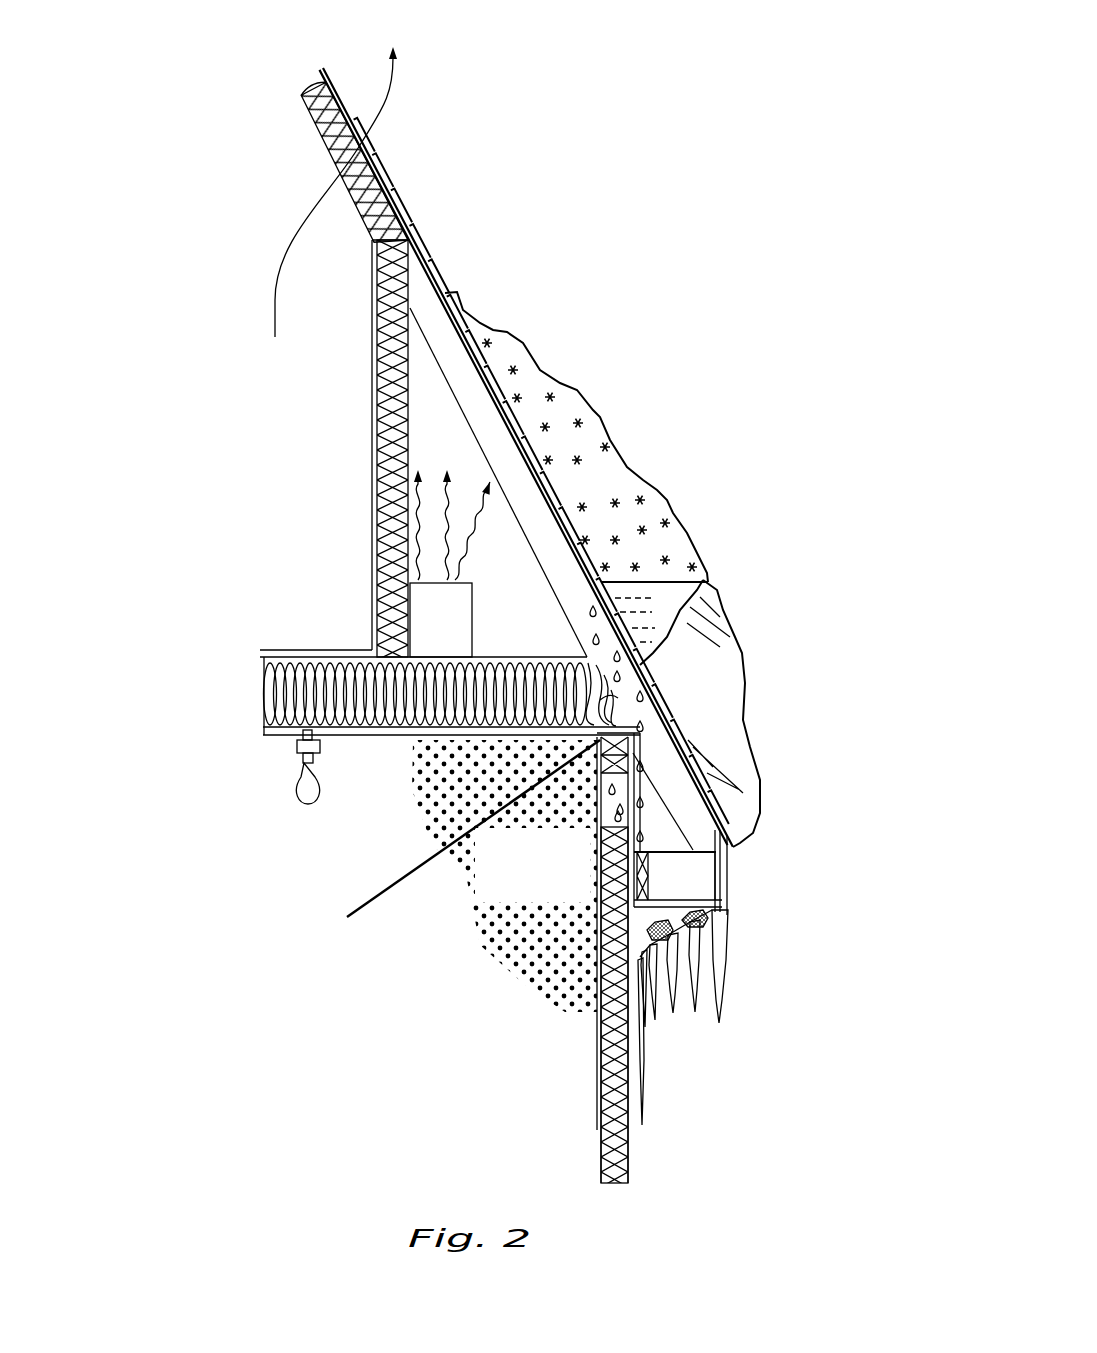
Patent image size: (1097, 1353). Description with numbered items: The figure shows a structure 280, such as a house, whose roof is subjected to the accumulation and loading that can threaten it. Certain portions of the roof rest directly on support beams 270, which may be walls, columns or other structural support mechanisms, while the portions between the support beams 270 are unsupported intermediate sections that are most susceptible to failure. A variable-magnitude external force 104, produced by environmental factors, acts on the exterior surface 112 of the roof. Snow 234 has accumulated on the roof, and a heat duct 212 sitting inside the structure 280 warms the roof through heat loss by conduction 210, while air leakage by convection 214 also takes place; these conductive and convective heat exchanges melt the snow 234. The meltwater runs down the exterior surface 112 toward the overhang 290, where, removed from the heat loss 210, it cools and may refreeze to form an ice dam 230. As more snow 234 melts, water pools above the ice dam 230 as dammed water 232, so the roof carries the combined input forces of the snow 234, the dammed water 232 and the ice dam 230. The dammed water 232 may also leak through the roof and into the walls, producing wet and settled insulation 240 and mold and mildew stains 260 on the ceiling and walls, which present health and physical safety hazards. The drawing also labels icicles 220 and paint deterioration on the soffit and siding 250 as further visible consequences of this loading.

The variable-magnitude external force 104 is at (495, 357).
The exterior surface 112 is at (402, 172).
The heat loss by conduction 210 is at (535, 825).
The heat duct 212 is at (473, 632).
The air leakage by convection 214 is at (276, 748).
The icicles 220 is at (744, 986).
The ice dam 230 is at (742, 755).
The dammed water 232 is at (650, 592).
The snow 234 is at (600, 417).
The wet and/or settled insulation 240 is at (590, 893).
The paint deterioration on soffit and siding 250 is at (650, 1037).
The mold and mildew stains 260 is at (469, 925).
The support beams 270 is at (787, 798).
The structure 280 is at (552, 182).
The overhang 290 is at (700, 875).